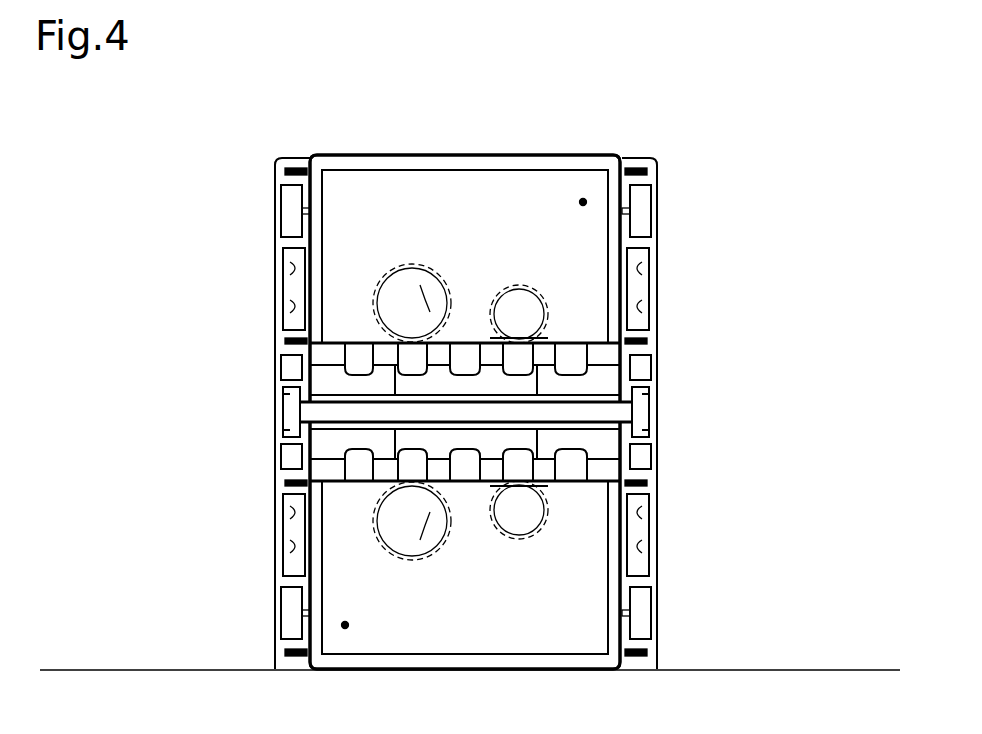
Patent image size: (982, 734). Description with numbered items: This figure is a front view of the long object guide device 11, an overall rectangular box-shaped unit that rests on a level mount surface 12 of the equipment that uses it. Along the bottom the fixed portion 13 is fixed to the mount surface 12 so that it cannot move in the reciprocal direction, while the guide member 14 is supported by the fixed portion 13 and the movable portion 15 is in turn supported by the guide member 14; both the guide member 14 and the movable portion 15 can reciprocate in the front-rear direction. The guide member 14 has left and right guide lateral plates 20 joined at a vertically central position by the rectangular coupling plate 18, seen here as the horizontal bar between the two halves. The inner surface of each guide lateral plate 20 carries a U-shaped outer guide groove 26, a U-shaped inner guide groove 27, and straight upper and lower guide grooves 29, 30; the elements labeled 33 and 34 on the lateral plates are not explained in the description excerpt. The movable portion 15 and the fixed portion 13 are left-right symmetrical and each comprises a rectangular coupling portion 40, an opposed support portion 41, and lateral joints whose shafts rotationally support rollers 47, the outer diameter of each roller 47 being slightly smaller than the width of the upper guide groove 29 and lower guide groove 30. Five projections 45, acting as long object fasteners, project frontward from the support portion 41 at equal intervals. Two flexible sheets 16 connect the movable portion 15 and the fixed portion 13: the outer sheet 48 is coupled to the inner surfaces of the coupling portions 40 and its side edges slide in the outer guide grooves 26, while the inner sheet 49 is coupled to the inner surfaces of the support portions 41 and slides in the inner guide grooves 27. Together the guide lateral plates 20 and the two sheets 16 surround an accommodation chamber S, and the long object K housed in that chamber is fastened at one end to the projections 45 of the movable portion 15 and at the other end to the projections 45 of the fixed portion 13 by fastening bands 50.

The long object guide device 11 is at (803, 184).
The mount surface 12 is at (80, 669).
The fixed portion 13 is at (528, 669).
The guide member 14 is at (262, 175).
The movable portion 15 is at (528, 168).
The sheets 16 is at (465, 412).
The coupling plate 18 is at (650, 412).
The guide lateral plates 20 is at (279, 210).
The outer guide groove 26 is at (300, 167).
The inner guide groove 27 is at (285, 343).
The upper guide groove 29 is at (283, 290).
The lower guide groove 30 is at (283, 546).
The clamp 33 is at (283, 318).
The clamp 34 is at (283, 518).
The coupling portion 40 is at (455, 160).
The support portion 41 is at (600, 342).
The projections 45 is at (412, 371).
The roller 47 is at (283, 262).
The outer sheet 48 is at (425, 172).
The inner sheet 49 is at (572, 537).
The fastening bands 50 is at (378, 286).
The long object K is at (432, 290).
The accommodation chamber S is at (583, 199).